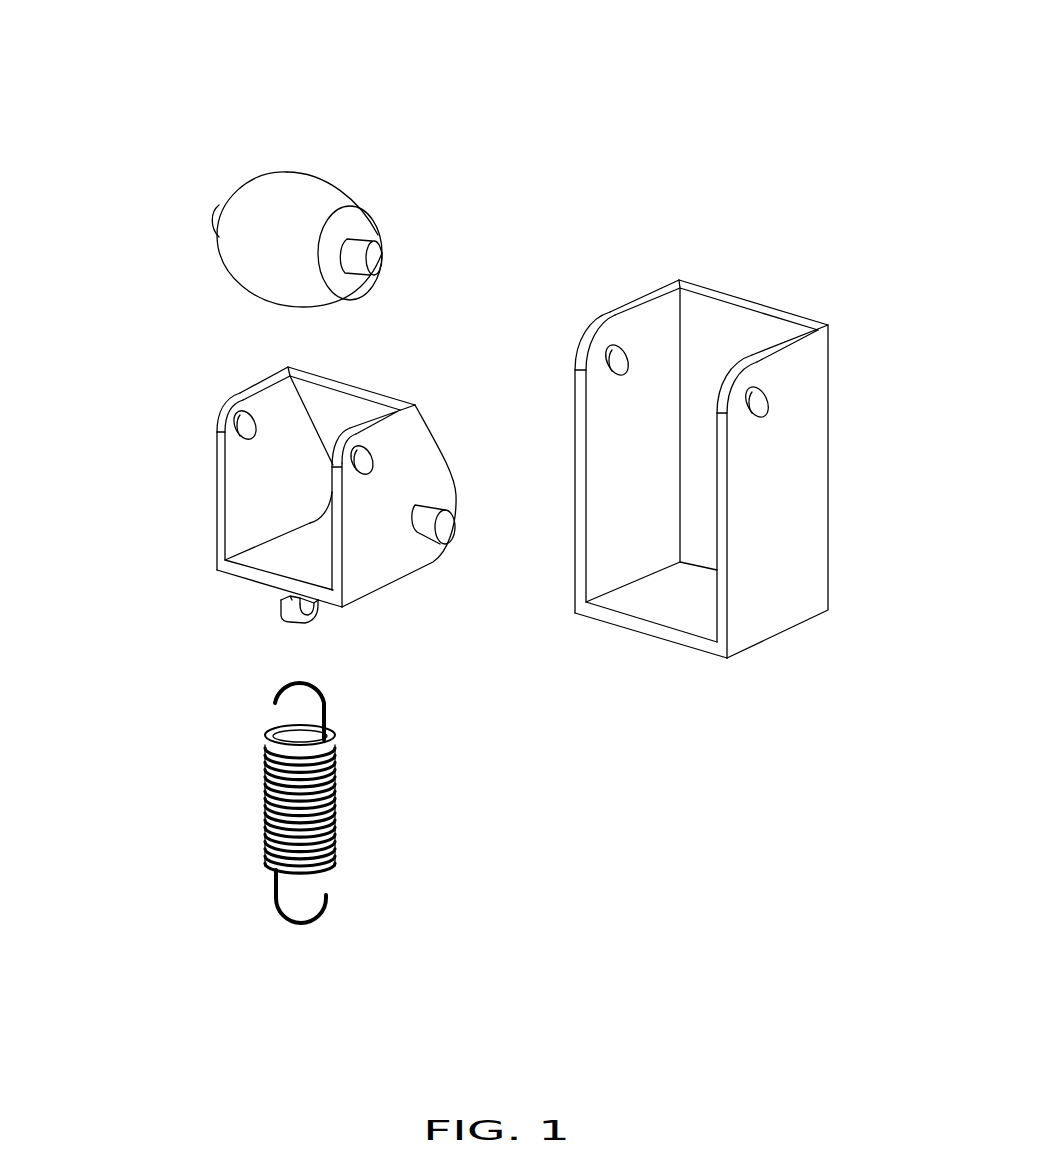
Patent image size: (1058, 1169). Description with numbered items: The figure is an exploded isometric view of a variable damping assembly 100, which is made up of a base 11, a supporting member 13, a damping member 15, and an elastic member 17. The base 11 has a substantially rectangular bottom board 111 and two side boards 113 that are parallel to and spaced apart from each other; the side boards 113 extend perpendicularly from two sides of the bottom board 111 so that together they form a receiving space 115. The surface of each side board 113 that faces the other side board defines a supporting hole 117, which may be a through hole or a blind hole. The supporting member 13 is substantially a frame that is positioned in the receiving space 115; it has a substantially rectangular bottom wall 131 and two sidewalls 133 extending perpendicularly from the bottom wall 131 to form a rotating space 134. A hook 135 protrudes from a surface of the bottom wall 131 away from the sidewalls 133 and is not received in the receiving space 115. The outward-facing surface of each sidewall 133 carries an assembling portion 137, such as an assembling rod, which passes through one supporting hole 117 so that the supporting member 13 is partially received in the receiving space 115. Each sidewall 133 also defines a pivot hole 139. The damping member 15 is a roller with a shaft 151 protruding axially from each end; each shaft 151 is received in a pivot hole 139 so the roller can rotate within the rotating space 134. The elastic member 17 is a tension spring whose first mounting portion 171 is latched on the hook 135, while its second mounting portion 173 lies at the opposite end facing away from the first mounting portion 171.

The variable damping assembly 100 is at (573, 40).
The base 11 is at (795, 712).
The bottom board 111 is at (698, 643).
The side boards 113 is at (760, 623).
The receiving space 115 is at (695, 443).
The supporting hole 117 is at (760, 398).
The supporting member 13 is at (127, 490).
The bottom wall 131 is at (242, 572).
The sidewalls 133 is at (222, 490).
The rotating space 134 is at (282, 410).
The hook 135 is at (303, 617).
The assembling portion 137 is at (450, 532).
The pivot hole 139 is at (242, 420).
The damping member 15 is at (323, 200).
The shaft 151 is at (375, 260).
The elastic member 17 is at (335, 802).
The first mounting portion 171 is at (323, 700).
The second mounting portion 173 is at (322, 908).